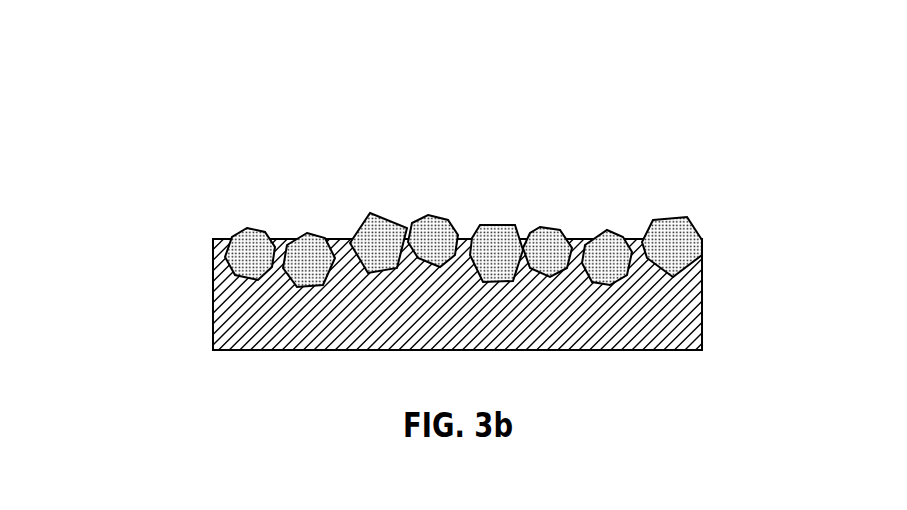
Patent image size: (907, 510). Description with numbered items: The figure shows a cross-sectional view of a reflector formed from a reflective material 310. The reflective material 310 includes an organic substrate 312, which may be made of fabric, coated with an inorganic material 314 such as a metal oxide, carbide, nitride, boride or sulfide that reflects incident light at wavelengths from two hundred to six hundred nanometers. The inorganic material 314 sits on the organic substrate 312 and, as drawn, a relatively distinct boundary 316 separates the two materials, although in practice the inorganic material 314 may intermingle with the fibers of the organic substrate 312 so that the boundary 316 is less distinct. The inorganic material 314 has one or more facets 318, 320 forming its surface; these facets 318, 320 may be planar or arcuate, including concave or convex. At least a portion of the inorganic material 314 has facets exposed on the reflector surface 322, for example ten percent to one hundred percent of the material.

The reflective material 310 is at (480, 233).
The organic substrate 312 is at (702, 318).
The inorganic material 314 is at (213, 257).
The boundary 316 is at (648, 288).
The facet 318 is at (359, 226).
The facet 320 is at (392, 218).
The reflector surface 322 is at (530, 197).